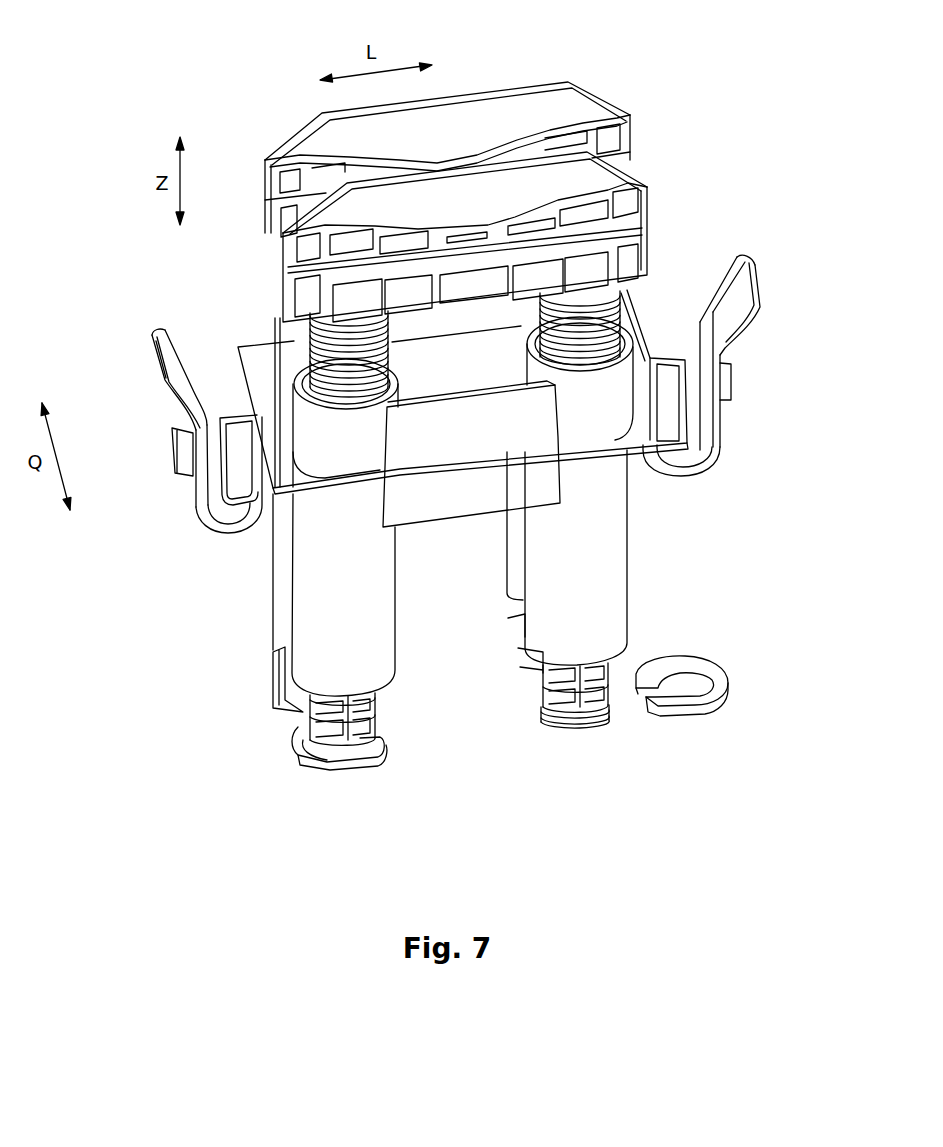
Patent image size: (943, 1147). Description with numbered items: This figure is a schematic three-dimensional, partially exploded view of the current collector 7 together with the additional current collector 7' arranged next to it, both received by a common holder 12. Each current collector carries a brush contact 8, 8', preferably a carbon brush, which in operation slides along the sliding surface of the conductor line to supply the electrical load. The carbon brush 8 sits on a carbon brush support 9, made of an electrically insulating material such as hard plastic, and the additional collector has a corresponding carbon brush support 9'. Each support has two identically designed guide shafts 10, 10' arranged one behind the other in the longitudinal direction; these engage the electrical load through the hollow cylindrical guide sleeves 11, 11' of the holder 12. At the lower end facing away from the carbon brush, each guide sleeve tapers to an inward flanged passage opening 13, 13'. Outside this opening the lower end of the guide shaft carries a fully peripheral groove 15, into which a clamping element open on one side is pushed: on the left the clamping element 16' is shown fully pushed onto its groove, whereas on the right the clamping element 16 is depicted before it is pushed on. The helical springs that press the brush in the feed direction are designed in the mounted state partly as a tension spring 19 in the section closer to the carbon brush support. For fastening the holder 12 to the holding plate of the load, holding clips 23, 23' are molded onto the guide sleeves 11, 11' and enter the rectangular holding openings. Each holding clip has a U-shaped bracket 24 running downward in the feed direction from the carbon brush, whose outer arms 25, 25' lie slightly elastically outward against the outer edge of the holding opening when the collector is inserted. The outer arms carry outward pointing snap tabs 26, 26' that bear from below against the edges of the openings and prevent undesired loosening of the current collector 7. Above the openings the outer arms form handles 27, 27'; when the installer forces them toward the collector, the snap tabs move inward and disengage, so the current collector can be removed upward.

The current collector 7 is at (496, 230).
The additional current collector 7' is at (478, 137).
The brush contact 8 is at (476, 170).
The brush contact 8' is at (449, 95).
The carbon brush support 9 is at (425, 255).
The carbon brush support 9' is at (418, 180).
The tension spring 19 is at (636, 296).
The holder 12 is at (254, 365).
The guide sleeve 11 is at (541, 508).
The guide sleeve 11' is at (306, 515).
The guide shaft 10 is at (536, 687).
The guide shaft 10' is at (300, 718).
The groove 15 is at (547, 710).
The clamping element 16 is at (715, 720).
The clamping element 16' is at (303, 776).
The passage opening 13 is at (600, 729).
The passage opening 13' is at (375, 759).
The holding clip 23 is at (722, 402).
The holding clip 23' is at (187, 469).
The U-shaped bracket 24 is at (705, 470).
The outer arm 25 is at (748, 402).
The outer arm 25' is at (166, 492).
The snap tab 26 is at (768, 401).
The snap tab 26' is at (144, 464).
The handle 27 is at (745, 276).
The handle 27' is at (158, 353).